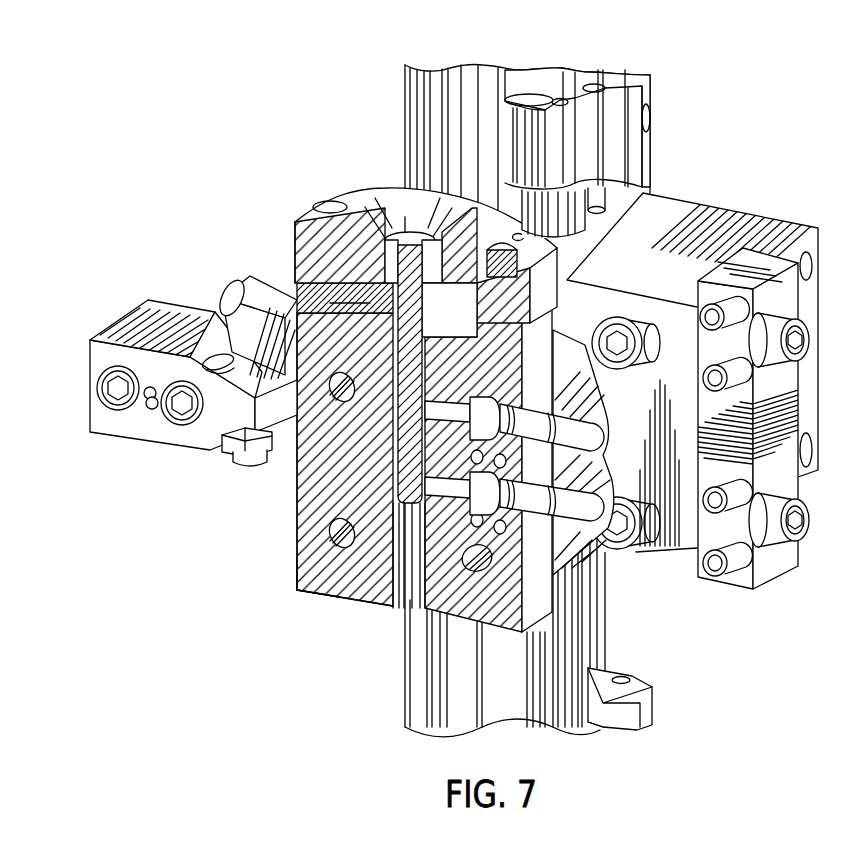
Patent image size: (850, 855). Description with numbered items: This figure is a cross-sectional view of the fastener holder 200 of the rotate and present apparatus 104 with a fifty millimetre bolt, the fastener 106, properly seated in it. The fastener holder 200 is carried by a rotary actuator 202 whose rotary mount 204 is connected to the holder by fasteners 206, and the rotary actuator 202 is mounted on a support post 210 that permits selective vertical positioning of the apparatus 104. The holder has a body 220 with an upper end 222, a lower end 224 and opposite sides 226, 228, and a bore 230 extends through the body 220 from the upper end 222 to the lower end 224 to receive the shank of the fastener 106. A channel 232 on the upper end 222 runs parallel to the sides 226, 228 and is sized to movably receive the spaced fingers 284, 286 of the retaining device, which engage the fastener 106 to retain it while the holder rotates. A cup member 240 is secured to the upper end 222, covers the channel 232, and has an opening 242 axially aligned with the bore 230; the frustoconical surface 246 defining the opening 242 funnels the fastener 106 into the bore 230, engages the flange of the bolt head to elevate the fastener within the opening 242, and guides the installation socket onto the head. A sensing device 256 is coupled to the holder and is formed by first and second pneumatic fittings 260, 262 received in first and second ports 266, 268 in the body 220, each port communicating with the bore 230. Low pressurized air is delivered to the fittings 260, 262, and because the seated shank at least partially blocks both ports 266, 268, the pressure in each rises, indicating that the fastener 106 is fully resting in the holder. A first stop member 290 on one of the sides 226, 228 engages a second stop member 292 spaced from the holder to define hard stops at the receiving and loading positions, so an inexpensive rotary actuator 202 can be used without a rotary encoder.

The rotate and present apparatus 104 is at (173, 666).
The fastener 106 is at (414, 197).
The fastener holder 200 is at (275, 633).
The rotary actuator 202 is at (717, 167).
The rotary mount 204 is at (663, 298).
The fasteners 206 is at (327, 540).
The support post 210 is at (490, 745).
The body 220 is at (305, 510).
The upper end 222 is at (292, 230).
The lower end 224 is at (315, 647).
The side 226 is at (627, 635).
The side 228 is at (297, 478).
The bore 230 is at (372, 640).
The channel 232 is at (313, 210).
The cup member 240 is at (593, 237).
The opening 242 is at (405, 205).
The surface 246 is at (423, 203).
The sensing device 256 is at (665, 367).
The first pneumatic fitting 260 is at (577, 372).
The second pneumatic fitting 262 is at (622, 602).
The first port 266 is at (580, 270).
The second port 268 is at (490, 650).
The finger 284 is at (428, 313).
The finger 286 is at (363, 303).
The first stop member 290 is at (247, 318).
The second stop member 292 is at (112, 466).